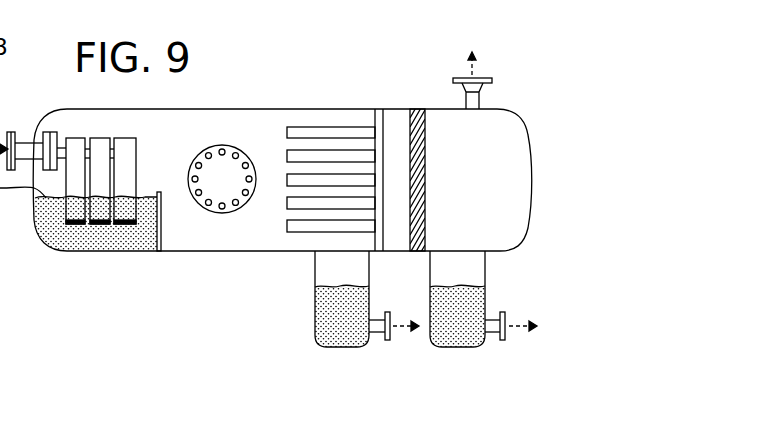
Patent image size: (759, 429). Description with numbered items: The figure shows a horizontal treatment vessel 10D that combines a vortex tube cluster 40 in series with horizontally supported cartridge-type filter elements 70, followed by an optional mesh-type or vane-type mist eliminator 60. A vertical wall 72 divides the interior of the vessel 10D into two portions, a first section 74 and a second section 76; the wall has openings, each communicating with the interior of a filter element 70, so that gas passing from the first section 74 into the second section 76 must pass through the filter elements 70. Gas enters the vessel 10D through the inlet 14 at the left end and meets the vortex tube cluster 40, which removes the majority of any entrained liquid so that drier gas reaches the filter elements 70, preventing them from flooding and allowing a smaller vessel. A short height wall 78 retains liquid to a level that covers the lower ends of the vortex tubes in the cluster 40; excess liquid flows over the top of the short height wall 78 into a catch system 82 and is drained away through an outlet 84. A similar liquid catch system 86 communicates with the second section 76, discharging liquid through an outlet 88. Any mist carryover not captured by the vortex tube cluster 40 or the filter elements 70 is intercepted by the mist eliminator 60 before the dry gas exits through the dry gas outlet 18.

The vessel 10D is at (217, 109).
The inlet nozzle 14 is at (18, 138).
The dry gas outlet 18 is at (480, 76).
The vortex tube cluster 40 is at (150, 155).
The mist eliminator 60 is at (427, 204).
The filter elements 70 is at (306, 150).
The vertical wall 72 is at (388, 125).
The first section 74 is at (247, 242).
The second section 76 is at (492, 169).
The short height wall 78 is at (161, 222).
The catch system 82 is at (315, 284).
The outlet 84 is at (380, 318).
The liquid catch system 86 is at (487, 285).
The outlet 88 is at (505, 338).